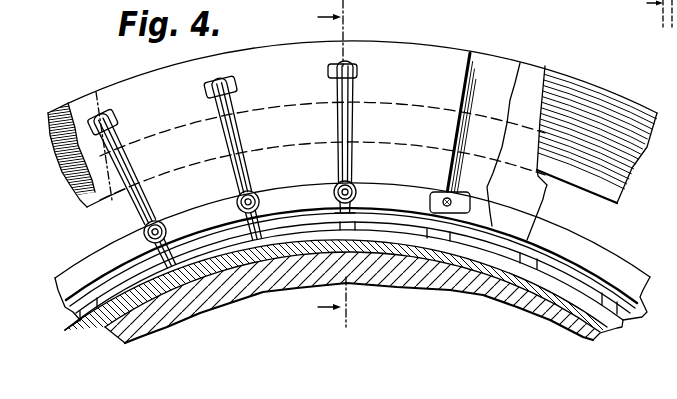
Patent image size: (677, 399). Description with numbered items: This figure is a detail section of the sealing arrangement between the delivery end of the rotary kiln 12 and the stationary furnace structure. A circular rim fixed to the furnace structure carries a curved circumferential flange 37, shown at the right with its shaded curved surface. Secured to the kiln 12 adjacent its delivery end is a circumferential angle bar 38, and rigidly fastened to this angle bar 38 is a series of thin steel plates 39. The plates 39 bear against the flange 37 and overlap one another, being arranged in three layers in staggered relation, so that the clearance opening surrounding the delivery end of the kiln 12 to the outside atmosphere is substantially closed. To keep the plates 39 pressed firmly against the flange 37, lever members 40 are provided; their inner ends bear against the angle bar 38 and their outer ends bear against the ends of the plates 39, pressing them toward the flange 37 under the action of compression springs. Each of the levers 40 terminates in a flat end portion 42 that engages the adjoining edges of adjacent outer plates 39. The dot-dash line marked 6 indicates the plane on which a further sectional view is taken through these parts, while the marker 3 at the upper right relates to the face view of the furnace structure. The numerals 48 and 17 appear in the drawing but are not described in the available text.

The kiln 12 is at (460, 288).
The curved circumferential flange 37 is at (601, 90).
The circumferential angle bar 38 is at (578, 281).
The thin steel plates 39 is at (434, 41).
The lever members 40 is at (237, 180).
The flat end portions 42 is at (208, 88).
The member 48 is at (676, 24).
The section line 6— 6 is at (342, 164).
The section line 3— 3 is at (657, 14).
The member 17 is at (50, 6).